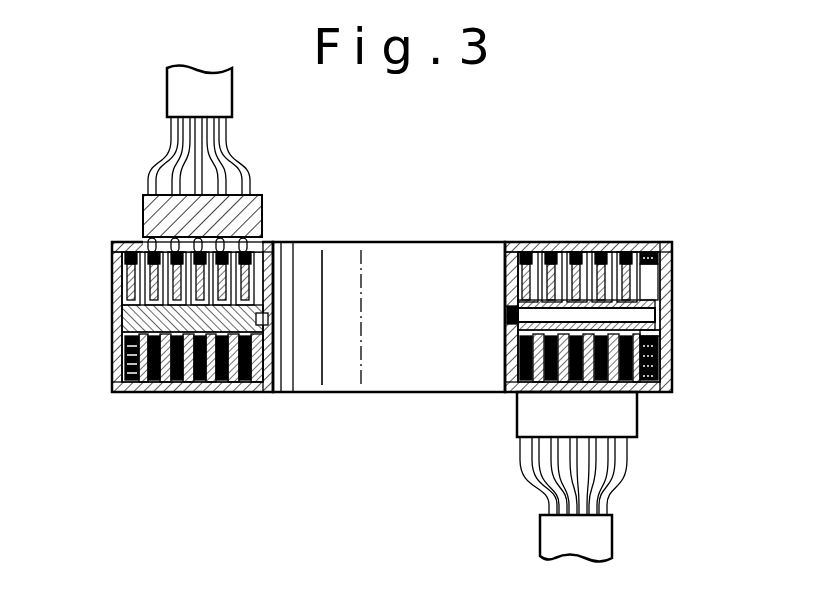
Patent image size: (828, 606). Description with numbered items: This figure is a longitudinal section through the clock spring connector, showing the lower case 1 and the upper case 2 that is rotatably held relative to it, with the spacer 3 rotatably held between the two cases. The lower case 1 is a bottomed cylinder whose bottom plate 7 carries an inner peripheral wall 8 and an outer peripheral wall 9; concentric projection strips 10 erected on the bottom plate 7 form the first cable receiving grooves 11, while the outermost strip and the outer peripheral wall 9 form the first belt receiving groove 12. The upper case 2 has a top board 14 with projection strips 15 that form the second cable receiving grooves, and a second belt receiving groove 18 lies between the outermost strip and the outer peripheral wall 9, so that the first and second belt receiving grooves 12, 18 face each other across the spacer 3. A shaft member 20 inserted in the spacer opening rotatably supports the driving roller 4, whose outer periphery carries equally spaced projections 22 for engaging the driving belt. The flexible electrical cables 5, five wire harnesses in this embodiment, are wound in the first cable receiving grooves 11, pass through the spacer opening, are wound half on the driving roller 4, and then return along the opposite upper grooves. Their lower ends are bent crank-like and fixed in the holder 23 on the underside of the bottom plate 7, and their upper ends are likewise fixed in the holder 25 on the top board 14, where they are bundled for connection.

The lower case 1 is at (112, 387).
The upper case 2 is at (640, 242).
The spacer 3 is at (115, 292).
The driving roller 4 is at (650, 290).
The flexible electrical cables 5 is at (555, 262).
The bottom plate 7 is at (206, 393).
The inner peripheral wall 8 is at (300, 393).
The outer peripheral wall 9 is at (112, 322).
The projection strips 10 is at (238, 393).
The first cable receiving grooves 11 is at (662, 347).
The first belt receiving groove 12 is at (112, 343).
The top board 14 is at (592, 243).
The projection strips 15 is at (506, 282).
The second belt receiving groove 18 is at (112, 268).
The shaft member 20 is at (505, 315).
The projections 22 is at (660, 302).
The holder 23 is at (625, 407).
The holder 25 is at (263, 200).